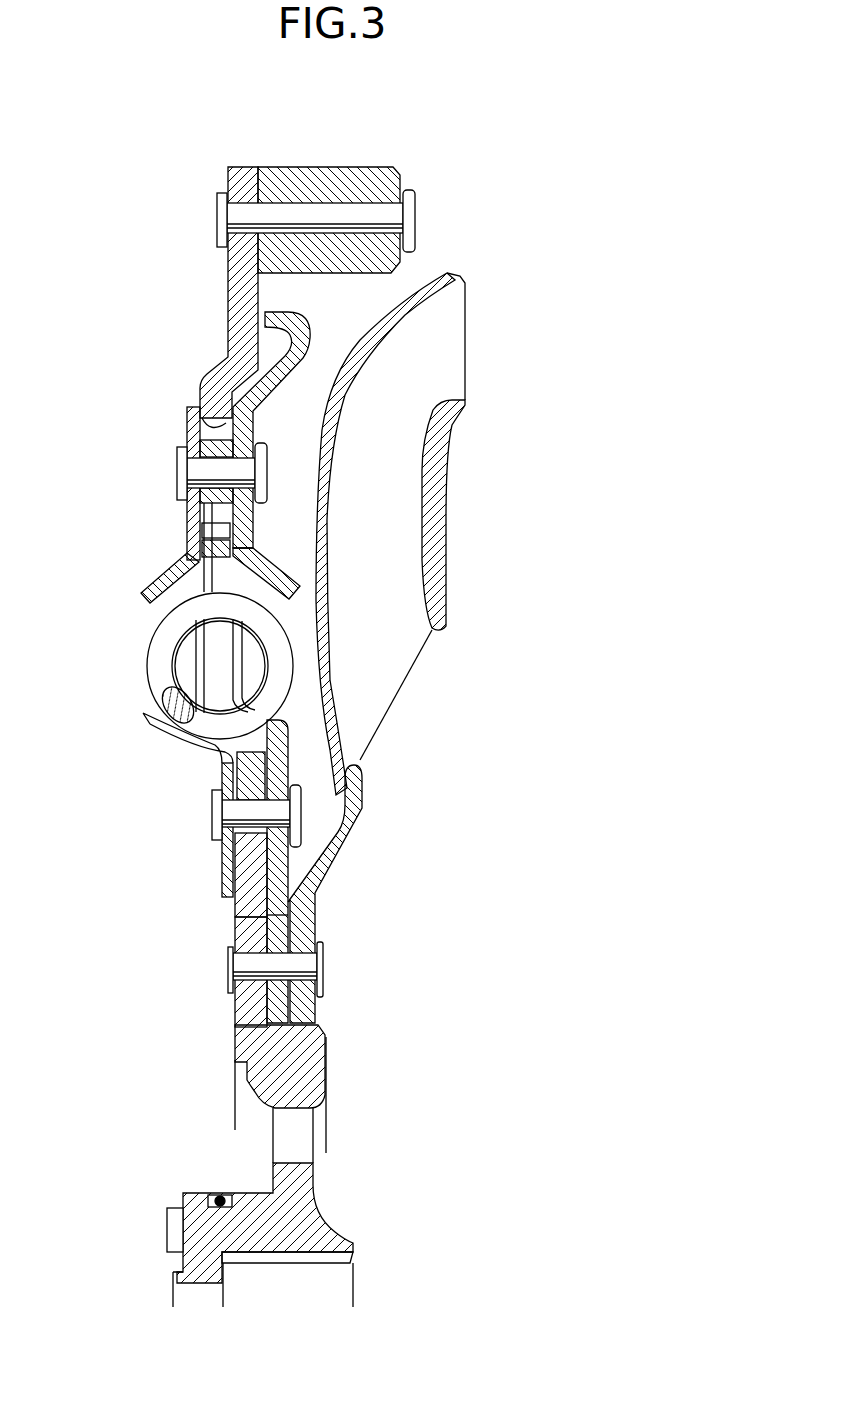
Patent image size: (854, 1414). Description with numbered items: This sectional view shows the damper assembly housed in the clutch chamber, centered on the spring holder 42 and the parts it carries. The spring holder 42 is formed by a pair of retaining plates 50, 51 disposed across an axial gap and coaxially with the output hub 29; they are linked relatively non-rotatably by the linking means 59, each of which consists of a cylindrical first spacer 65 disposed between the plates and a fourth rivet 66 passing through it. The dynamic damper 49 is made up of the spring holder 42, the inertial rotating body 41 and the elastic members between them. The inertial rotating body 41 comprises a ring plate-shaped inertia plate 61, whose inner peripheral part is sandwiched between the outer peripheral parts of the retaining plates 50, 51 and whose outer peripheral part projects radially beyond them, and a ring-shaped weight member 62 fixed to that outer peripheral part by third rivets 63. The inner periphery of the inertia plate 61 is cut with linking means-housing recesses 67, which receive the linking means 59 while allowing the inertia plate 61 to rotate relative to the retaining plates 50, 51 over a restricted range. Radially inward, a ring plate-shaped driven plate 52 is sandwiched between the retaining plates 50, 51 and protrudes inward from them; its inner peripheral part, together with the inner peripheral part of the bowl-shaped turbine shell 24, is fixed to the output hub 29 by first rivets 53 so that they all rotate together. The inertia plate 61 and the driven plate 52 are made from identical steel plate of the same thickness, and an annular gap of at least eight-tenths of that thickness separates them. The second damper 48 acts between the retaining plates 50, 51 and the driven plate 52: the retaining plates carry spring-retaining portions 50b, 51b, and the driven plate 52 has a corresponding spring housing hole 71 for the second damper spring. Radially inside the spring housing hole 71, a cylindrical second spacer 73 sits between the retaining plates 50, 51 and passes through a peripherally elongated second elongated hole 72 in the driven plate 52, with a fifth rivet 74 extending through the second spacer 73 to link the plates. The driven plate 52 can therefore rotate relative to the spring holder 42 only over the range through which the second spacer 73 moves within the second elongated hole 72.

The turbine shell 24 is at (448, 275).
The output hub 29 is at (325, 1228).
The inertial rotating body 41 is at (412, 178).
The spring holder 42 is at (268, 413).
The second damper 48 is at (205, 765).
The dynamic damper 49 is at (334, 243).
The retaining plate 50 is at (283, 867).
The spring-retaining portion 50b is at (290, 578).
The retaining plate 51 is at (179, 851).
The spring-retaining portion 51b is at (150, 592).
The driven plate 52 is at (250, 917).
The first rivet 53 is at (295, 967).
The linking means 59 is at (275, 462).
The inertia plate 61 is at (233, 330).
The weight member 62 is at (368, 185).
The third rivet 63 is at (337, 189).
The first spacer 65 is at (207, 493).
The fourth rivet 66 is at (222, 459).
The linking means-housing recess 67 is at (207, 418).
The spring housing hole 71 is at (275, 665).
The second elongated hole 72 is at (335, 831).
The second spacer 73 is at (250, 840).
The fifth rivet 74 is at (277, 812).